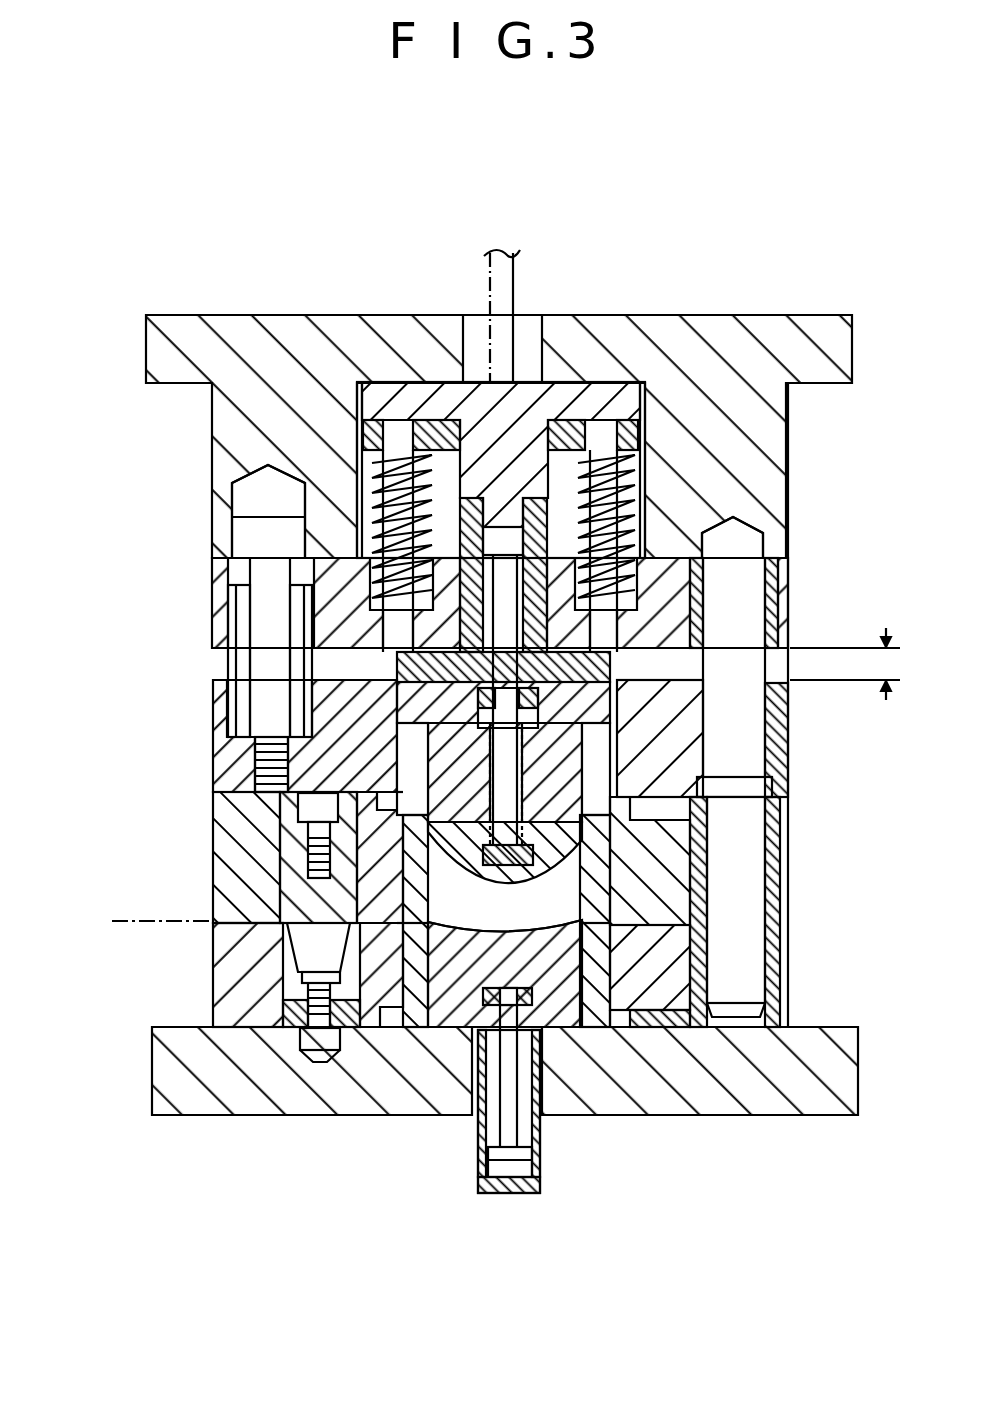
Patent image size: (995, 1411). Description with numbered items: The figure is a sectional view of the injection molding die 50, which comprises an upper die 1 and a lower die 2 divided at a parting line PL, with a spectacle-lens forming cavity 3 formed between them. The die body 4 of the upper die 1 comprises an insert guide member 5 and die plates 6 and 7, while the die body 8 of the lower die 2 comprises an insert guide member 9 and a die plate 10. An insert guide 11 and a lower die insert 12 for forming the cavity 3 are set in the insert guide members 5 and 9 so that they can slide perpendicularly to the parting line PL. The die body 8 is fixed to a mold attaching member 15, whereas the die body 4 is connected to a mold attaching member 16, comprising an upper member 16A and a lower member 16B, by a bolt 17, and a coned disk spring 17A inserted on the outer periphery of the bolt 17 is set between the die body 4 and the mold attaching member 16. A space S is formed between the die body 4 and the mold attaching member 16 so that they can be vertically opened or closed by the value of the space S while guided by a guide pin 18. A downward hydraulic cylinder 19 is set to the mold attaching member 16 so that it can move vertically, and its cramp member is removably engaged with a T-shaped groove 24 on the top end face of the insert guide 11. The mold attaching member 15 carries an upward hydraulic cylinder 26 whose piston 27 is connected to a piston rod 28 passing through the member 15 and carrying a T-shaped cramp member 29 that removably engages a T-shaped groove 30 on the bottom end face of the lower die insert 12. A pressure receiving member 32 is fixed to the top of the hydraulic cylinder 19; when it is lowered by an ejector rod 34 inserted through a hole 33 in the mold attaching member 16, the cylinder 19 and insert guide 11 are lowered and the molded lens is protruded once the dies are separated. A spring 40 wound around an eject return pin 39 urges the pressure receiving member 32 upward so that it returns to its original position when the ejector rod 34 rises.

The injection molding die 50 is at (155, 243).
The upper die 1 is at (100, 722).
The lower die 2 is at (105, 1035).
The spectacle-lens forming cavity 3 is at (348, 1112).
The die body 4 is at (222, 815).
The insert guide member 5 is at (610, 877).
The die plate 6 is at (222, 882).
The die plate 7 is at (222, 745).
The die body 8 is at (222, 1000).
The insert guide member 9 is at (598, 980).
The die plate 10 is at (222, 953).
The insert guide 11 is at (612, 840).
The lower die insert 12 is at (597, 950).
The mold attaching member 15 is at (196, 1100).
The mold attaching member 16 is at (462, 481).
The upper member 16A is at (215, 443).
The lower member 16B is at (458, 565).
The bolt 17 is at (237, 582).
The coned disk spring 17A is at (233, 630).
The guide pin 18 is at (753, 727).
The hydraulic cylinder 19 is at (465, 520).
The T-shaped groove 24 is at (490, 874).
The hydraulic cylinder 26 is at (505, 1195).
The piston 27 is at (535, 1170).
The piston rod 28 is at (520, 1137).
The T-shaped cramp member 29 is at (458, 912).
The T-shaped groove 30 is at (522, 985).
The pressure receiving member 32 is at (613, 383).
The hole 33 is at (455, 345).
The ejector rod 34 is at (477, 262).
The eject return pin 39 is at (620, 472).
The spring 40 is at (633, 507).
The space S is at (855, 664).
The parting line PL is at (141, 921).